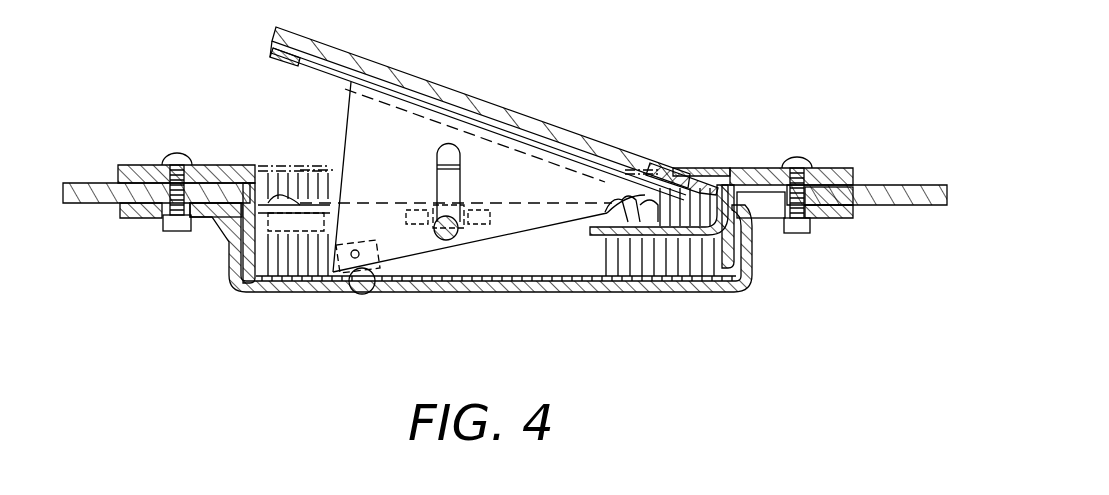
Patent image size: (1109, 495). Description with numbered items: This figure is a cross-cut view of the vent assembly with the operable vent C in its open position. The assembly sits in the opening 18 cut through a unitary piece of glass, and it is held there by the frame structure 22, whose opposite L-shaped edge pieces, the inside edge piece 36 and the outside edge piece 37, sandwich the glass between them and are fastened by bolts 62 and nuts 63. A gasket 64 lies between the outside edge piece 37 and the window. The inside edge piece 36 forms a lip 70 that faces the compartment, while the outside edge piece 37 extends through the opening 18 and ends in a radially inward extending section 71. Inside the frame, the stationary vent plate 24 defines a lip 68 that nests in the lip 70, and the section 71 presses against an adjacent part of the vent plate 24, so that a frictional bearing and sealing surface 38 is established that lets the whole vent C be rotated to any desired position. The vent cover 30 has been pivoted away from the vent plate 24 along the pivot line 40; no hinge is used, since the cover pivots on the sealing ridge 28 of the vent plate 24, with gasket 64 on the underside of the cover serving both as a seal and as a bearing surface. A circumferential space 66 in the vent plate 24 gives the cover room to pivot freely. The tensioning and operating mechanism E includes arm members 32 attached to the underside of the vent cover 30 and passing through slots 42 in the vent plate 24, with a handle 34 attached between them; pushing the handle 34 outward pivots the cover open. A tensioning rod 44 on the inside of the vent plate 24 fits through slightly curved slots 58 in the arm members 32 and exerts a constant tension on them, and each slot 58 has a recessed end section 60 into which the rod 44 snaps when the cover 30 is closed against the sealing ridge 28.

The opening 18 is at (764, 195).
The frame structure 22 is at (757, 168).
The vent plate 24 is at (587, 214).
The sealing ridge 28 is at (257, 183).
The vent cover 30 is at (478, 99).
The arm member 32 is at (350, 115).
The handle 34 is at (362, 293).
The inside edge piece 36 is at (132, 218).
The outside edge piece 37 is at (95, 183).
The frictional bearing and sealing surface 38 is at (249, 256).
The pivot line 40 is at (633, 210).
The slot 42 is at (333, 246).
The tensioning rod 44 is at (456, 235).
The slot 58 is at (447, 190).
The recessed end section 60 is at (436, 150).
The bolt 62 is at (797, 158).
The nut 63 is at (812, 224).
The gasket 64 is at (274, 52).
The circumferential space 66 is at (668, 212).
The lip 68 is at (250, 291).
The lip 70 is at (227, 281).
The radially inward extending section 71 is at (738, 262).
The operable vent C is at (553, 103).
The tensioning device E is at (454, 270).